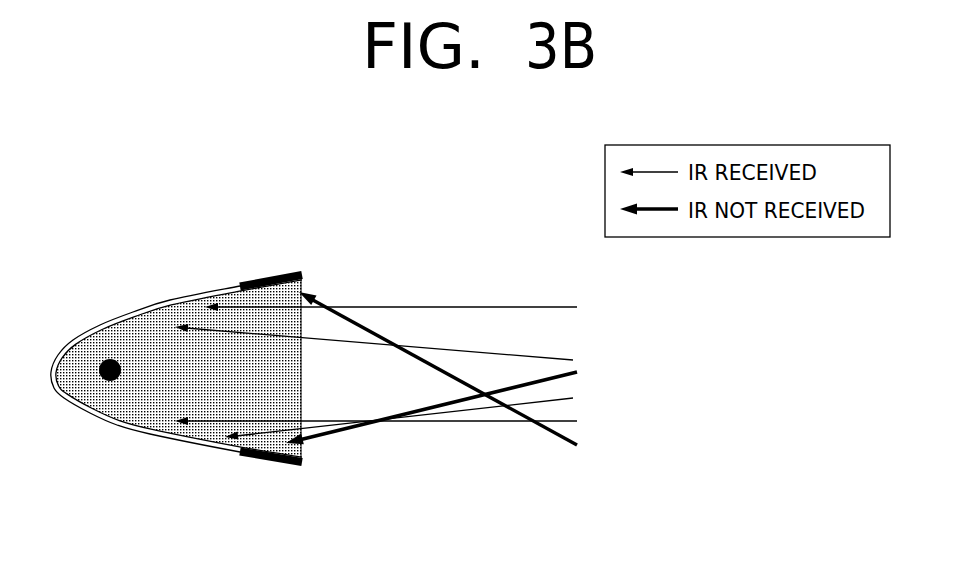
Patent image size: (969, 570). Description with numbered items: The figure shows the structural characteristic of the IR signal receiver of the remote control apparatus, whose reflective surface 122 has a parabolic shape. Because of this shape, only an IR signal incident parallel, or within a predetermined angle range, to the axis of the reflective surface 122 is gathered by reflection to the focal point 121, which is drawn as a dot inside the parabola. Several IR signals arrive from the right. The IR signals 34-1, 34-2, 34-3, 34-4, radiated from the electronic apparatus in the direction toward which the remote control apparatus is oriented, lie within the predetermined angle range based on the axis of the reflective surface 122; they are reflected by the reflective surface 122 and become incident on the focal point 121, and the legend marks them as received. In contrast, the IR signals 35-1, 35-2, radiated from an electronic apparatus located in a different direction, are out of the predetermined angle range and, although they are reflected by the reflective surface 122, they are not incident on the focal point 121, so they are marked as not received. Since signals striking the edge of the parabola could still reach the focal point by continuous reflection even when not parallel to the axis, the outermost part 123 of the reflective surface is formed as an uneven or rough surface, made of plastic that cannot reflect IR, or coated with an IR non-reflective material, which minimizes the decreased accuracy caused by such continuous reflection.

The focal point 121 is at (106, 358).
The reflective surface 122 is at (161, 303).
The outermost part 123 is at (271, 277).
The IR signal 34-1 is at (540, 307).
The IR signal 34-2 is at (540, 357).
The IR signal 34-3 is at (560, 398).
The IR signal 34-4 is at (577, 421).
The IR signal 35-1 is at (437, 358).
The IR signal 35-2 is at (455, 403).